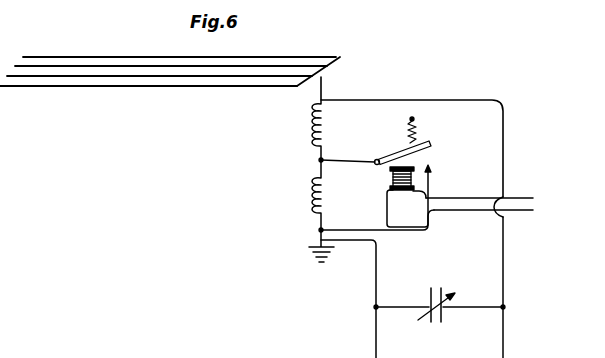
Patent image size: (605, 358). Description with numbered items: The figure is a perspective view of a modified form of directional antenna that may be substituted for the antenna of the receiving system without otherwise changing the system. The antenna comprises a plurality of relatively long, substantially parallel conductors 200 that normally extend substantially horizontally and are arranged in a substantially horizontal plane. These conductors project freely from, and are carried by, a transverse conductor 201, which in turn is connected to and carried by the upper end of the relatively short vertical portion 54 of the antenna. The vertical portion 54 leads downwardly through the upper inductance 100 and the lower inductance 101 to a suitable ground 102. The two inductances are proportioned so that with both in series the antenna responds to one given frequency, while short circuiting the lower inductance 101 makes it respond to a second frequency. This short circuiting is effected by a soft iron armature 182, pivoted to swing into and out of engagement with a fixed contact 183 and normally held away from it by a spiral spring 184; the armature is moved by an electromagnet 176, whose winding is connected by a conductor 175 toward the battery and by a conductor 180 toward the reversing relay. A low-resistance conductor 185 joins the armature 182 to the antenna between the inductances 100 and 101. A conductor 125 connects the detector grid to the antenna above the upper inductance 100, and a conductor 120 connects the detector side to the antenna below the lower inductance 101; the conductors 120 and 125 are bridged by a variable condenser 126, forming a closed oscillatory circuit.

The parallel conductors 200 is at (98, 86).
The transverse conductor 201 is at (338, 61).
The vertical portion of the antenna 54 is at (323, 88).
The upper inductance 100 is at (314, 132).
The lower inductance 101 is at (313, 196).
The ground 102 is at (312, 252).
The conductor 185 is at (352, 158).
The soft iron armature 182 is at (390, 155).
The spiral spring 184 is at (416, 124).
The fixed contact 183 is at (433, 167).
The electromagnet 176 is at (392, 184).
The conductor 180 is at (491, 202).
The conductor 175 is at (491, 217).
The conductor 125 is at (505, 280).
The conductor 120 is at (377, 262).
The variable condenser 126 is at (439, 322).